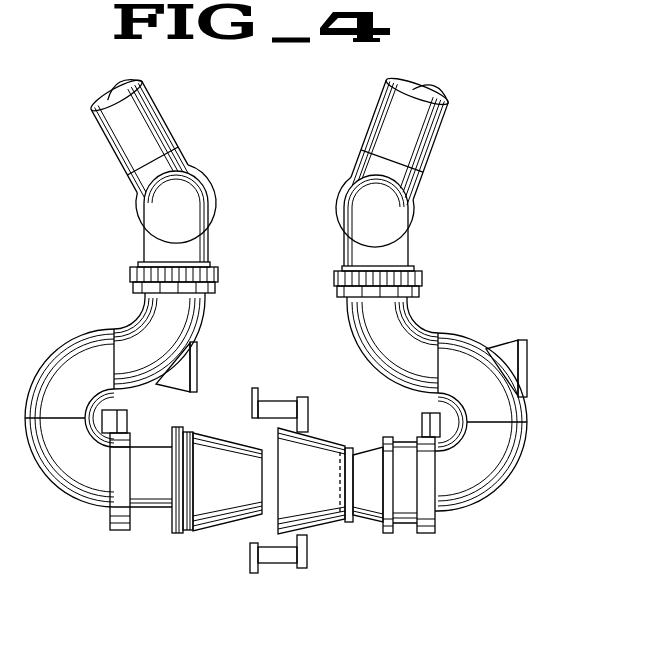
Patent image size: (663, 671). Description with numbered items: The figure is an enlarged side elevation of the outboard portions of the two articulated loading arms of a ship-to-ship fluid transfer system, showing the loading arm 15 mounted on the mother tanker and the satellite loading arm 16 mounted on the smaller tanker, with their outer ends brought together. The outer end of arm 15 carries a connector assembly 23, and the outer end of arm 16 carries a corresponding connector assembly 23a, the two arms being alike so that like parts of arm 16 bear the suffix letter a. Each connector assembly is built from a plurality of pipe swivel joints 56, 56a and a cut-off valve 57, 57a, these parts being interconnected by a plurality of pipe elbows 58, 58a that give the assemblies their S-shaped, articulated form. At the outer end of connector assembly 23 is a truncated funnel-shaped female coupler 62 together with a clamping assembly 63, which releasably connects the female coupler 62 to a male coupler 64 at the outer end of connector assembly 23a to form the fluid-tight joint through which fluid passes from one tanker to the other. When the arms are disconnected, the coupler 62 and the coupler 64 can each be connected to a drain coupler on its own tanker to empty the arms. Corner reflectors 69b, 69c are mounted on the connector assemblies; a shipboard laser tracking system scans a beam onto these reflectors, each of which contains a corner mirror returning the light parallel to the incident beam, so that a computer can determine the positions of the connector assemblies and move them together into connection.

The loading arm 15 is at (368, 104).
The loading arm 16 is at (161, 94).
The connector assembly 23 is at (440, 322).
The connector assembly 23a is at (119, 320).
The pipe swivel joint 56 is at (412, 271).
The pipe swivel joint 56a is at (137, 269).
The cut-off valve 57 is at (417, 440).
The cut-off valve 57a is at (130, 439).
The pipe elbow 58 is at (346, 305).
The pipe elbow 58a is at (204, 304).
The female coupler 62 is at (328, 526).
The clamping assembly 63 is at (284, 397).
The male coupler 64 is at (218, 525).
The corner reflector 69b is at (198, 364).
The corner reflector 69c is at (538, 330).